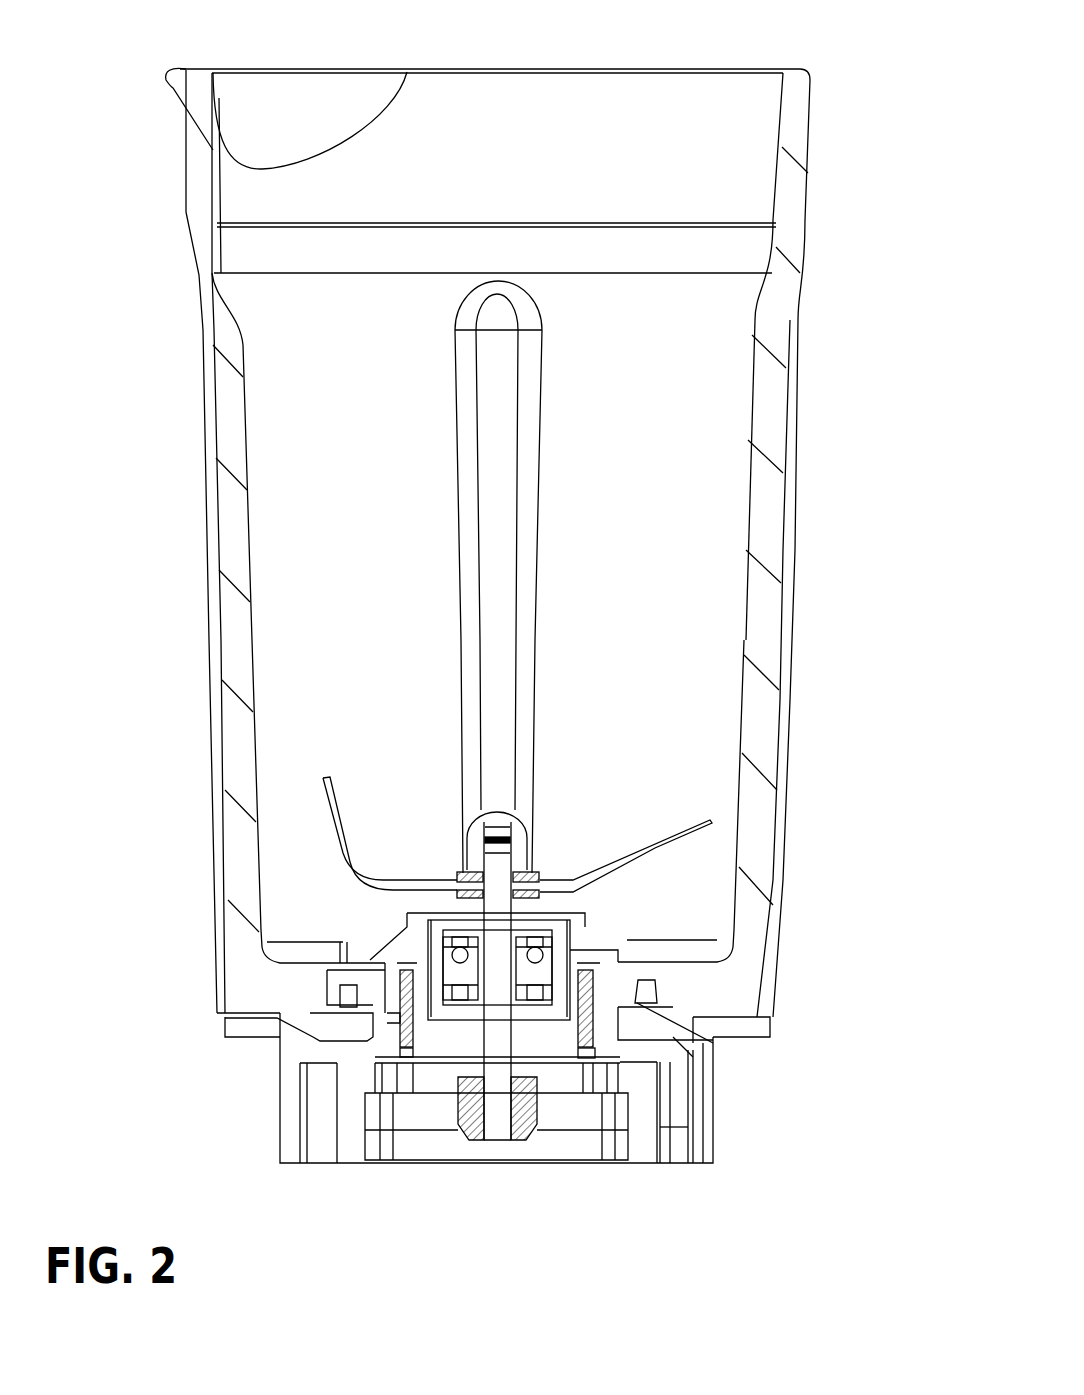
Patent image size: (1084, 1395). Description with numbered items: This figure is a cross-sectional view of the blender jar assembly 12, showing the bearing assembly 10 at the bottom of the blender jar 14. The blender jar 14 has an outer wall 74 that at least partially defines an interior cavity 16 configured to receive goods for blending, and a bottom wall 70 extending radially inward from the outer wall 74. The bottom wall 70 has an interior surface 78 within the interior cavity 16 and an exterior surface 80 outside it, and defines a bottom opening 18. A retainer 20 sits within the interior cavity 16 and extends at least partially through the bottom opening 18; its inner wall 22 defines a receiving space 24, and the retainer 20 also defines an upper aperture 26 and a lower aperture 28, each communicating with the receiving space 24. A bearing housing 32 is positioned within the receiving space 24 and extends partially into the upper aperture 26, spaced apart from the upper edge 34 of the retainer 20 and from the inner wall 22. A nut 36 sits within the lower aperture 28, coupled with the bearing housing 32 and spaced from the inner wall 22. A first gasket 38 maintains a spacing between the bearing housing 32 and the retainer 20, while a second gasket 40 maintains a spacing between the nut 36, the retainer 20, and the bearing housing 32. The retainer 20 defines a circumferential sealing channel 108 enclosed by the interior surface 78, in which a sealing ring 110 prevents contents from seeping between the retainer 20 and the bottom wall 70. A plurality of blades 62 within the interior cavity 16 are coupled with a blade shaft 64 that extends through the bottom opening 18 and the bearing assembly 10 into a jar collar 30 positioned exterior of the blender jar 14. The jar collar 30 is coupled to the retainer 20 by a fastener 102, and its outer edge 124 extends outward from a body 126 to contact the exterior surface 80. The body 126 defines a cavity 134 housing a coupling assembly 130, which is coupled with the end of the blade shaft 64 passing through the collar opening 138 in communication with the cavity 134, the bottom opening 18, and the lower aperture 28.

The bearing assembly 10 is at (642, 888).
The blender jar assembly 12 is at (563, 509).
The blender jar 14 is at (371, 148).
The interior cavity 16 is at (600, 156).
The bottom opening 18 is at (392, 1027).
The retainer 20 is at (400, 938).
The inner wall 22 is at (645, 948).
The receiving space 24 is at (373, 1037).
The upper aperture 26 is at (473, 852).
The lower aperture 28 is at (433, 1035).
The jar collar 30 is at (285, 1140).
The bearing housing 32 is at (405, 978).
The upper edge 34 is at (413, 923).
The nut 36 is at (643, 1062).
The first gasket 38 is at (423, 962).
The second gasket 40 is at (717, 1058).
The plurality of blades 62 is at (557, 903).
The blade shaft 64 is at (468, 852).
The bottom wall 70 is at (687, 1012).
The outer wall 74 is at (766, 610).
The interior surface 78 is at (640, 1020).
The exterior surface 80 is at (400, 1015).
The fastener 102 is at (390, 1030).
The sealing channel 108 is at (675, 960).
The sealing ring 110 is at (643, 972).
The outer edge 124 is at (773, 1027).
The body 126 is at (683, 1143).
The coupling assembly 130 is at (480, 1147).
The cavity 134 is at (655, 1120).
The collar opening 138 is at (540, 1052).